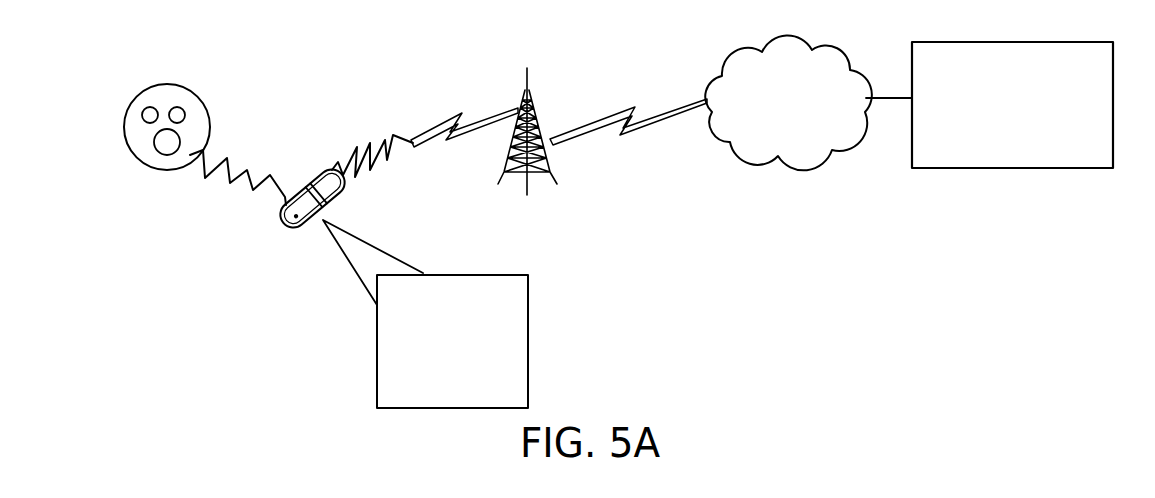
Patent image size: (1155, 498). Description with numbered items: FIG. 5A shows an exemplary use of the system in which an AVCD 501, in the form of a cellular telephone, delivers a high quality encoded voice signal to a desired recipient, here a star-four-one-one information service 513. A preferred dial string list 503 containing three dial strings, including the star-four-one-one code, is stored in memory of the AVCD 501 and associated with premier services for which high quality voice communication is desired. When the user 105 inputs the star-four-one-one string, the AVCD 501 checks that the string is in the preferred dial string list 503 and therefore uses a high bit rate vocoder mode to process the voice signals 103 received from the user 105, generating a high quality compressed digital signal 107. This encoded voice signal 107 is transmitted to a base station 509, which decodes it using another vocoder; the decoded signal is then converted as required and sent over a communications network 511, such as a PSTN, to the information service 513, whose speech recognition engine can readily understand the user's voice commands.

The user 105 is at (145, 167).
The voice signals 103 is at (222, 178).
The AVCD 501 is at (304, 205).
The high quality compressed digital signal 107 is at (387, 157).
The base station 509 is at (548, 158).
The communications network 511 is at (792, 136).
The *411 information service 513 is at (1111, 122).
The preferred dial string list 503 is at (377, 357).